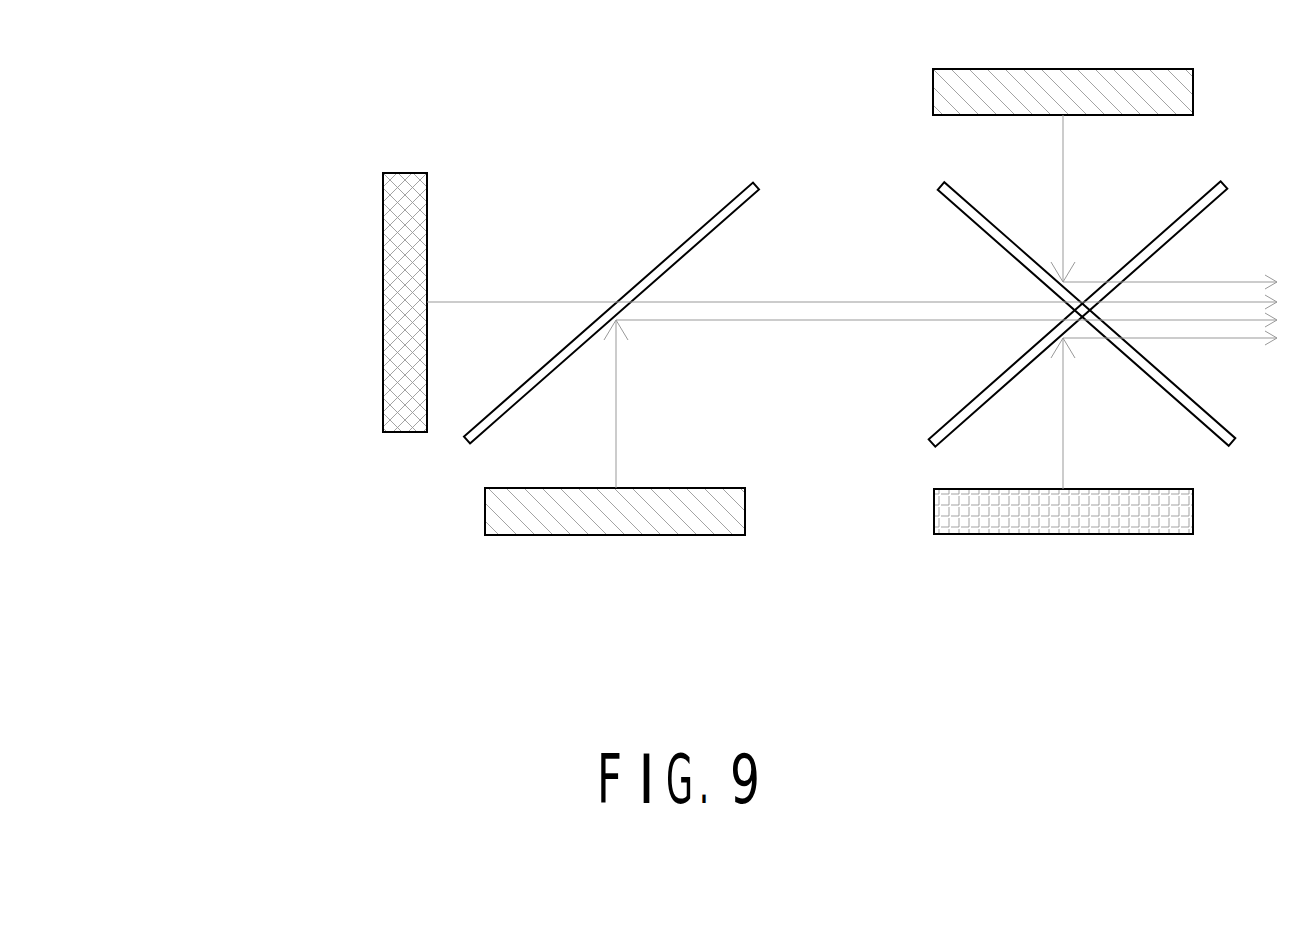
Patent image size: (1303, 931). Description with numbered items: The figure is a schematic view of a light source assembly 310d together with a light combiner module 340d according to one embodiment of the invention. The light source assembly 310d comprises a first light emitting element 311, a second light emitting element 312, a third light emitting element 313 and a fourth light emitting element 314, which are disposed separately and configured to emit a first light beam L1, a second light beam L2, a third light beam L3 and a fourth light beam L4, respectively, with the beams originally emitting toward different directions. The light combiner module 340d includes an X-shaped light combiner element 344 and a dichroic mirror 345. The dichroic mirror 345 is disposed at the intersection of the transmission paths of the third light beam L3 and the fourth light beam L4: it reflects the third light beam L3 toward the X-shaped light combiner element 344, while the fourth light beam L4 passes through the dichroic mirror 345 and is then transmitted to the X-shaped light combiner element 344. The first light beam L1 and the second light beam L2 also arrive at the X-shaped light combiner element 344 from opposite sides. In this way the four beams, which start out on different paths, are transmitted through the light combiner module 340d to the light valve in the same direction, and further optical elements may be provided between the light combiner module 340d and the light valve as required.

The light source assembly 310d is at (227, 250).
The first light emitting element 311 is at (963, 78).
The second light emitting element 312 is at (970, 522).
The third light emitting element 313 is at (510, 507).
The fourth light emitting element 314 is at (397, 340).
The light combiner module 340d is at (903, 97).
The X-shaped light combiner element 344 is at (950, 197).
The dichroic mirror 345 is at (745, 200).
The first light beam L1 is at (1063, 188).
The second light beam L2 is at (1063, 420).
The third light beam L3 is at (617, 422).
The fourth light beam L4 is at (518, 302).